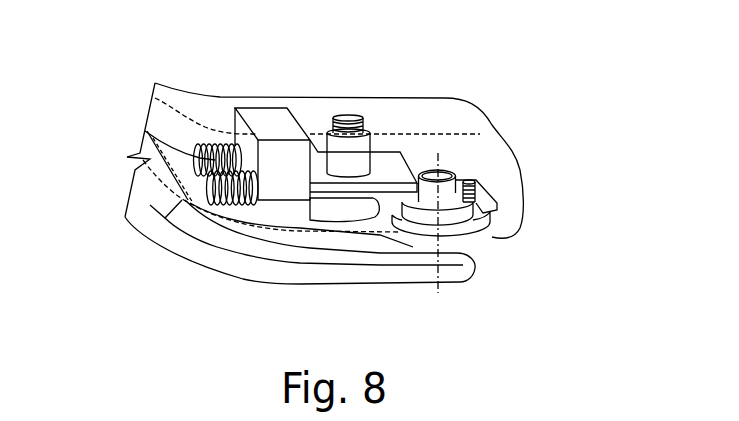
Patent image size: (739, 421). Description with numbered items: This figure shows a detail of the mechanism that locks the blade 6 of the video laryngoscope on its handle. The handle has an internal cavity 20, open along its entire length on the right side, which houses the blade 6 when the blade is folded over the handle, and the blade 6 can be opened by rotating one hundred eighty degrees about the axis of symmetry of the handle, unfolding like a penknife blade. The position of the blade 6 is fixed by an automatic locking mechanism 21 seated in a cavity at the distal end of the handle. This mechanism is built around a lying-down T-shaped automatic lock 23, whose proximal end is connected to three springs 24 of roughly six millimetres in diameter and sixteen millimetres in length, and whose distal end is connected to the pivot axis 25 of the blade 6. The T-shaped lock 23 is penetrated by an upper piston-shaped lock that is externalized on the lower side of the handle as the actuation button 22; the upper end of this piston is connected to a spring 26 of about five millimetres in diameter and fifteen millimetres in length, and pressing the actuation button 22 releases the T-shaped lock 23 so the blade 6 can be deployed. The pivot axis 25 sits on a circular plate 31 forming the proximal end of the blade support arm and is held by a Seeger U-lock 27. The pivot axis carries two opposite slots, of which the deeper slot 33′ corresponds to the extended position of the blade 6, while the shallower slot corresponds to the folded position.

The blade 6 is at (177, 238).
The internal cavity 20 is at (433, 125).
The automatic locking mechanism 21 is at (292, 218).
The actuation button 22 is at (348, 212).
The T-shaped automatic lock 23 is at (378, 163).
The springs 24 is at (152, 168).
The pivot axis 25 is at (476, 269).
The spring 26 is at (352, 117).
The Seeger U-lock 27 is at (481, 207).
The circular plate 31 is at (490, 235).
The deeper slot 33′ is at (478, 197).